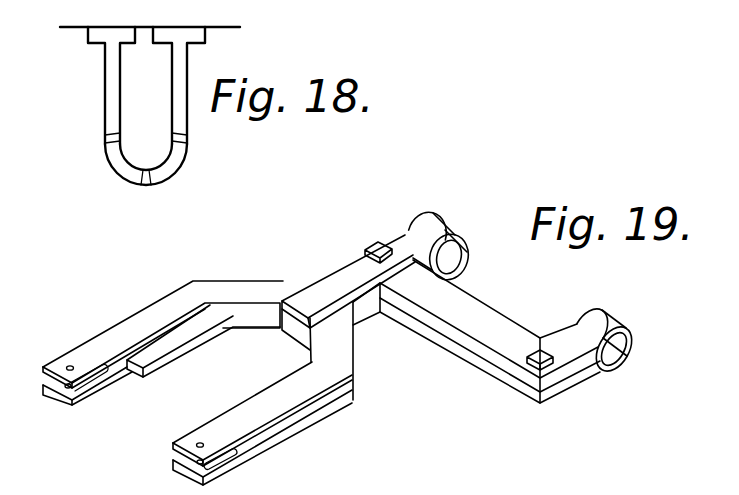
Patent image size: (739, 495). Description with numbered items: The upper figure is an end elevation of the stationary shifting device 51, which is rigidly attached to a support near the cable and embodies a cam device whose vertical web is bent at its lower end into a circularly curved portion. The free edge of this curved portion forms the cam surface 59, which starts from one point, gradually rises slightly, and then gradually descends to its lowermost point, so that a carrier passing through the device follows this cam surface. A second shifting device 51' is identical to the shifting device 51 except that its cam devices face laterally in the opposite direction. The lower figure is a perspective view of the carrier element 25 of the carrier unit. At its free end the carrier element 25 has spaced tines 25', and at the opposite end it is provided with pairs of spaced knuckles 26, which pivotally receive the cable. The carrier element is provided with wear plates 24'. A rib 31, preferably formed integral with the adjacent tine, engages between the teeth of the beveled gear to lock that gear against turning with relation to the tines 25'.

In FIG. 18, the shifting device 51 is at (147, 106).
In FIG. 18, the shifting device 51' is at (185, 81).
In FIG. 18, the cam surface 59 is at (168, 167).
In FIG. 19, the wear plates 24' is at (421, 318).
In FIG. 19, the carrier element 25 is at (355, 349).
In FIG. 19, the tines 25' is at (197, 385).
In FIG. 19, the knuckles 26 is at (440, 228).
In FIG. 19, the rib 31 is at (180, 340).